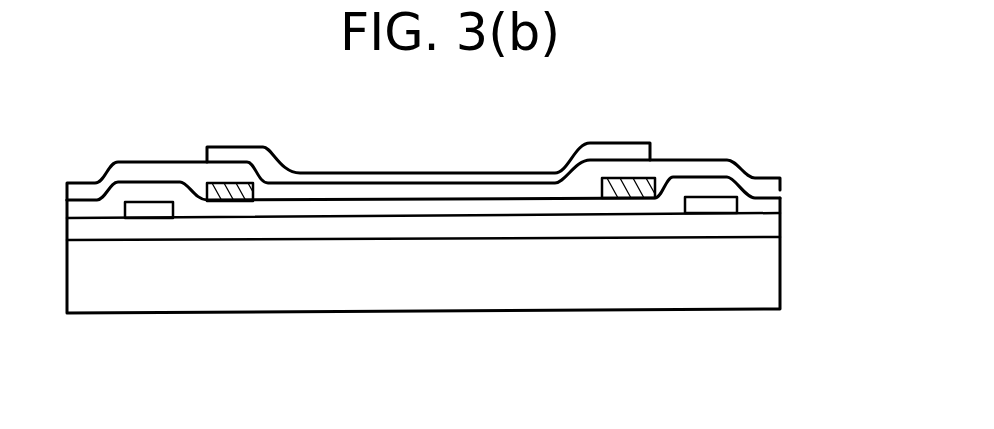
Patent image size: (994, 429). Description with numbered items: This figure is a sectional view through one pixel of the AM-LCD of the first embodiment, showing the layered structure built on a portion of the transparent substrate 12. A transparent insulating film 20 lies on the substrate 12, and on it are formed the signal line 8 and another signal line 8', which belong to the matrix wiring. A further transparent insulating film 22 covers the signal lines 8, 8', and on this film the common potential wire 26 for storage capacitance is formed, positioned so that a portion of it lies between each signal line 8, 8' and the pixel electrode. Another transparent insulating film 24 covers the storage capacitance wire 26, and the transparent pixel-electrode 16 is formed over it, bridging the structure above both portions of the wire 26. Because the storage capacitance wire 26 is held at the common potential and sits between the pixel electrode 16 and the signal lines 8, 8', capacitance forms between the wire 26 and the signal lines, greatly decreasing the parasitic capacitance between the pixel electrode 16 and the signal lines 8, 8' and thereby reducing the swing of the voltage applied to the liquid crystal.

The transparent substrate 12 is at (770, 270).
The transparent insulating film 20 is at (770, 223).
The signal line 8 is at (149, 164).
The signal line 8' is at (720, 160).
The transparent insulating film 22 is at (770, 203).
The common potential wire for storage capacitance 26 is at (242, 186).
The transparent insulating film 24 is at (768, 186).
The transparent pixel-electrode 16 is at (648, 143).